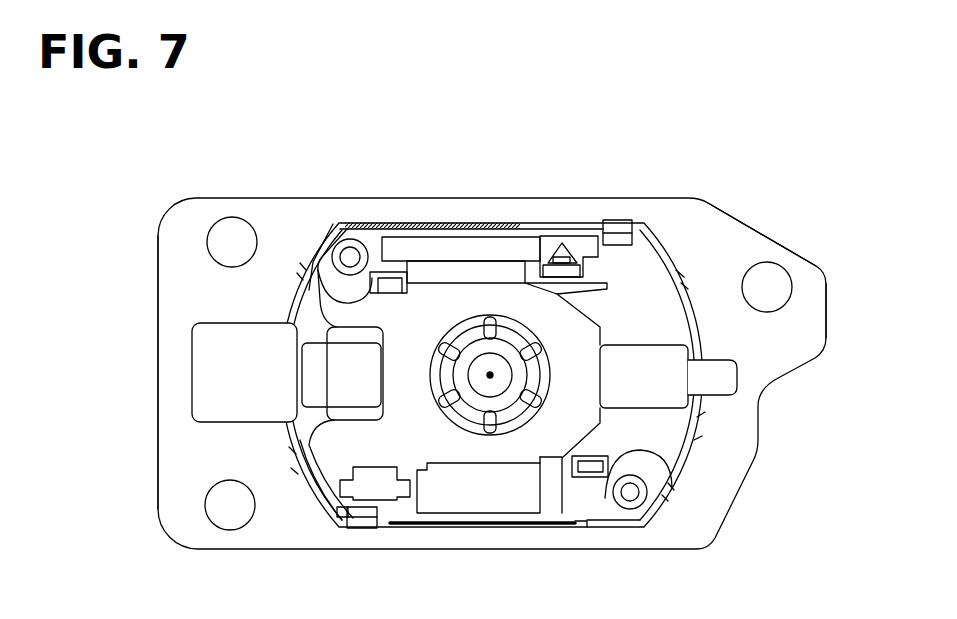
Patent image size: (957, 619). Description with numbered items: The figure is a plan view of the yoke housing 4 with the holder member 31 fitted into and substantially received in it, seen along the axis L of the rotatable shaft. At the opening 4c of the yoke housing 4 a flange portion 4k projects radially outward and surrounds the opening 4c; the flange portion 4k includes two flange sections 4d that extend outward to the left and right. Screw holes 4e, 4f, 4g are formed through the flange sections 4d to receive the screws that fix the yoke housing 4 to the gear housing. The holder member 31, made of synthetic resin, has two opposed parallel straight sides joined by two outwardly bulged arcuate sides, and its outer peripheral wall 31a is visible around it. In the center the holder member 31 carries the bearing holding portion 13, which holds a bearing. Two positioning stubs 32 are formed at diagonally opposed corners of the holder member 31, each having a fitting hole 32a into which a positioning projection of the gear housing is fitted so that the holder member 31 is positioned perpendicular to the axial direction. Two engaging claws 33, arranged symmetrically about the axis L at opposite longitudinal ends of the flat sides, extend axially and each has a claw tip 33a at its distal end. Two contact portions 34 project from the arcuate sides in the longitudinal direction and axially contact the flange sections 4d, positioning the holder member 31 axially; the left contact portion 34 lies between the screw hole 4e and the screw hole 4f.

The yoke housing 4 is at (658, 200).
The opening 4c is at (320, 485).
The flange sections 4d is at (174, 288).
The screw hole 4e is at (238, 217).
The screw hole 4f is at (224, 530).
The screw hole 4g is at (773, 262).
The flange portion 4k is at (708, 218).
The bearing holding portion 13 is at (503, 378).
The holder member 31 is at (467, 229).
The outer peripheral wall 31a is at (668, 272).
The positioning stubs 32 is at (333, 278).
The fitting hole 32a is at (348, 252).
The engaging claws 33 is at (620, 247).
The claw tip 33a is at (613, 221).
The contact portions 34 is at (208, 377).
The axis L is at (490, 375).